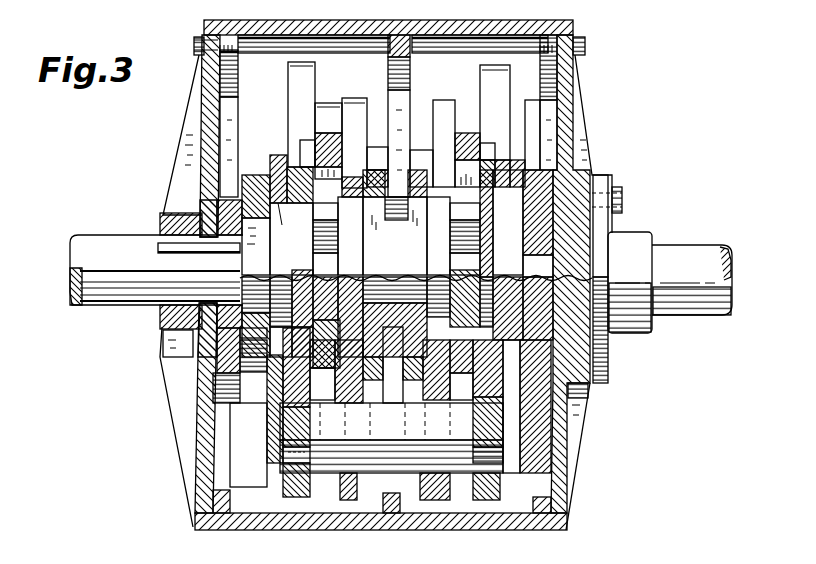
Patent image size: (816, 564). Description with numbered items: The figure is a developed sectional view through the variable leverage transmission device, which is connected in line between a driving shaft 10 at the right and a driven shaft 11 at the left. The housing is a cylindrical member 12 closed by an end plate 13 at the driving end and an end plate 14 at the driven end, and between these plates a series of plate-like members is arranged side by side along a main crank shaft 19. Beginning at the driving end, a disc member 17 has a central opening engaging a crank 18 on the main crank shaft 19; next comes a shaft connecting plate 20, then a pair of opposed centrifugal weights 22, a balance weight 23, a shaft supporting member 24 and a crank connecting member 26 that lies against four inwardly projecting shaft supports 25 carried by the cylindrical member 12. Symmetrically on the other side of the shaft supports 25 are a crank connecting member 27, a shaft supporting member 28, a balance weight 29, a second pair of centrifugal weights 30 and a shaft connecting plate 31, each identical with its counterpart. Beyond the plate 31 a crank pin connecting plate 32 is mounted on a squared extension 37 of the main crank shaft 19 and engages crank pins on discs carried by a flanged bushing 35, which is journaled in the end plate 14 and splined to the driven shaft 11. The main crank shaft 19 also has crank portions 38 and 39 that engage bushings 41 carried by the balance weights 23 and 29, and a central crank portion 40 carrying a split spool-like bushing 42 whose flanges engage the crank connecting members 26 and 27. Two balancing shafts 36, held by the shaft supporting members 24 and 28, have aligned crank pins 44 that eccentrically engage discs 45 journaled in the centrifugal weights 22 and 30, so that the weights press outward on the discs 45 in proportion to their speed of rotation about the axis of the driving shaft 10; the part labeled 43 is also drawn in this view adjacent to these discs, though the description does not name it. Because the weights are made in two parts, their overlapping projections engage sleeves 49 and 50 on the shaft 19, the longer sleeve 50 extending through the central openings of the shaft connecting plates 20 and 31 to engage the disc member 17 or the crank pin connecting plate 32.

The driving shaft 10 is at (688, 248).
The driven shaft 11 is at (106, 250).
The cylindrical member 12 is at (573, 35).
The end plate 13 is at (573, 108).
The end plate 14 is at (212, 117).
The disc member 17 is at (606, 353).
The crank 18 is at (536, 321).
The main crank shaft 19 is at (499, 261).
The shaft connecting plate 20 is at (570, 447).
The centrifugal weights 22 is at (496, 83).
The balance weight 23 is at (465, 140).
The shaft supporting member 24 is at (440, 503).
The inwardly projecting shaft supports 25 is at (412, 75).
The crank connecting member 26 is at (418, 160).
The crank connecting member 27 is at (377, 160).
The shaft supporting member 28 is at (350, 495).
The balance weight 29 is at (323, 133).
The centrifugal weights 30 is at (288, 83).
The shaft connecting plate 31 is at (280, 158).
The crank pin connecting plate 32 is at (268, 180).
The flanged bushing 35 is at (223, 355).
The balancing shafts 36 is at (391, 400).
The squared extension 37 is at (256, 266).
The crank portion 38 is at (471, 248).
The crank portion 39 is at (326, 285).
The central crank portion 40 is at (395, 280).
The bushings 41 is at (416, 306).
The split spool like bushing 42 is at (412, 282).
The gear 43 is at (333, 412).
The crank pins 44 is at (292, 455).
The discs 45 is at (290, 408).
The sleeve 49 is at (291, 294).
The sleeve 50 is at (312, 200).